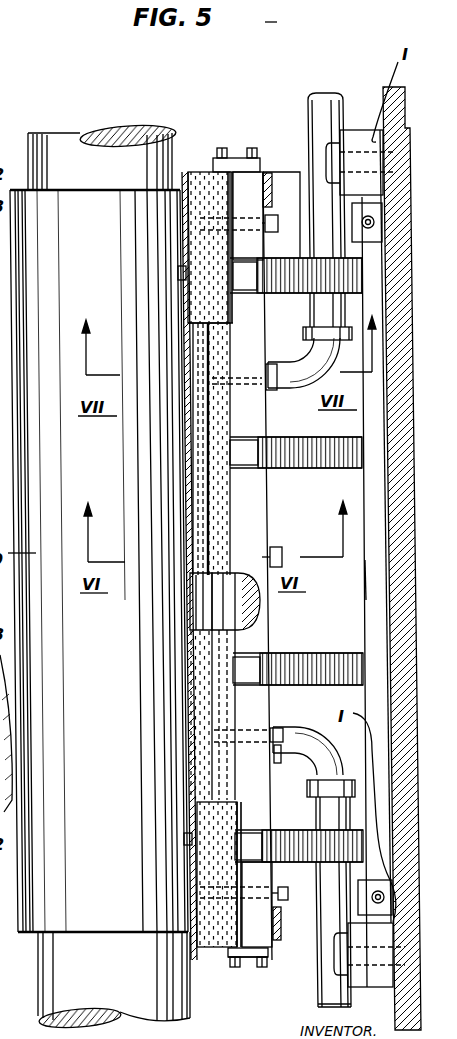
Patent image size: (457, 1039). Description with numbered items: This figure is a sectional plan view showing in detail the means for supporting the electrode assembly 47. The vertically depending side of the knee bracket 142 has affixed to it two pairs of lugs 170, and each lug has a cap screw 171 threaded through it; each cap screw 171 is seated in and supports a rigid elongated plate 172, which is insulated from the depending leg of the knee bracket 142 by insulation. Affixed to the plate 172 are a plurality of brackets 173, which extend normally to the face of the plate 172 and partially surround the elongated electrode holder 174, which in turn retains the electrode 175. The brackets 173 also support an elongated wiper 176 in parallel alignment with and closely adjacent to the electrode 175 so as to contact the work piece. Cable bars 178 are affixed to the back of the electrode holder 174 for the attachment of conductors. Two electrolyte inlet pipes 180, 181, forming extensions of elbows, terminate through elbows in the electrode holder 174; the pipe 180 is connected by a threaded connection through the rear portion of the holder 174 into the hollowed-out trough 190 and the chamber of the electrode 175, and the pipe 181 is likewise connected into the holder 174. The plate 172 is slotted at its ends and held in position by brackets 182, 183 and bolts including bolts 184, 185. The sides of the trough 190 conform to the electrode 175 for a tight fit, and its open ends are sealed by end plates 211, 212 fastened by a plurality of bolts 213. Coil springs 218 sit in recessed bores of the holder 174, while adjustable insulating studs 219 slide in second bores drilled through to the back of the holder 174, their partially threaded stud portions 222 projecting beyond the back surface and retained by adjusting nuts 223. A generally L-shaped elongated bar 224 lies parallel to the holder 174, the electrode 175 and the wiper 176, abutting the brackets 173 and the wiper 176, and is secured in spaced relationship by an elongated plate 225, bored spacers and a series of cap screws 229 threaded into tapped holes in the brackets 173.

The electrode assembly 47 is at (300, 1003).
The knee bracket 142 is at (402, 620).
The lugs 170 is at (353, 228).
The cap screw 171 is at (363, 220).
The rigid elongated plate 172 is at (375, 565).
The brackets 173 is at (289, 283).
The electrode holder 174 is at (253, 490).
The electrode 175 is at (198, 617).
The wiper 176 is at (188, 533).
The cable bars 178 is at (272, 173).
The electrolyte inlet pipe 180 is at (318, 106).
The electrolyte inlet pipe 181 is at (343, 1005).
The bracket 182 is at (362, 980).
The bracket 183 is at (350, 135).
The bolt 184 is at (332, 165).
The bolt 185 is at (340, 953).
The hollowed-out trough 190 is at (240, 590).
The end plate 211 is at (230, 953).
The end plate 212 is at (238, 158).
The bolts 213 is at (222, 150).
The coil springs 218 is at (303, 333).
The adjustable studs 219 is at (212, 402).
The stud portion 222 is at (282, 533).
The adjusting nuts 223 is at (286, 557).
The L-shaped elongated bar 224 is at (195, 172).
The elongated plate 225 is at (240, 246).
The cap screw 229 is at (182, 273).